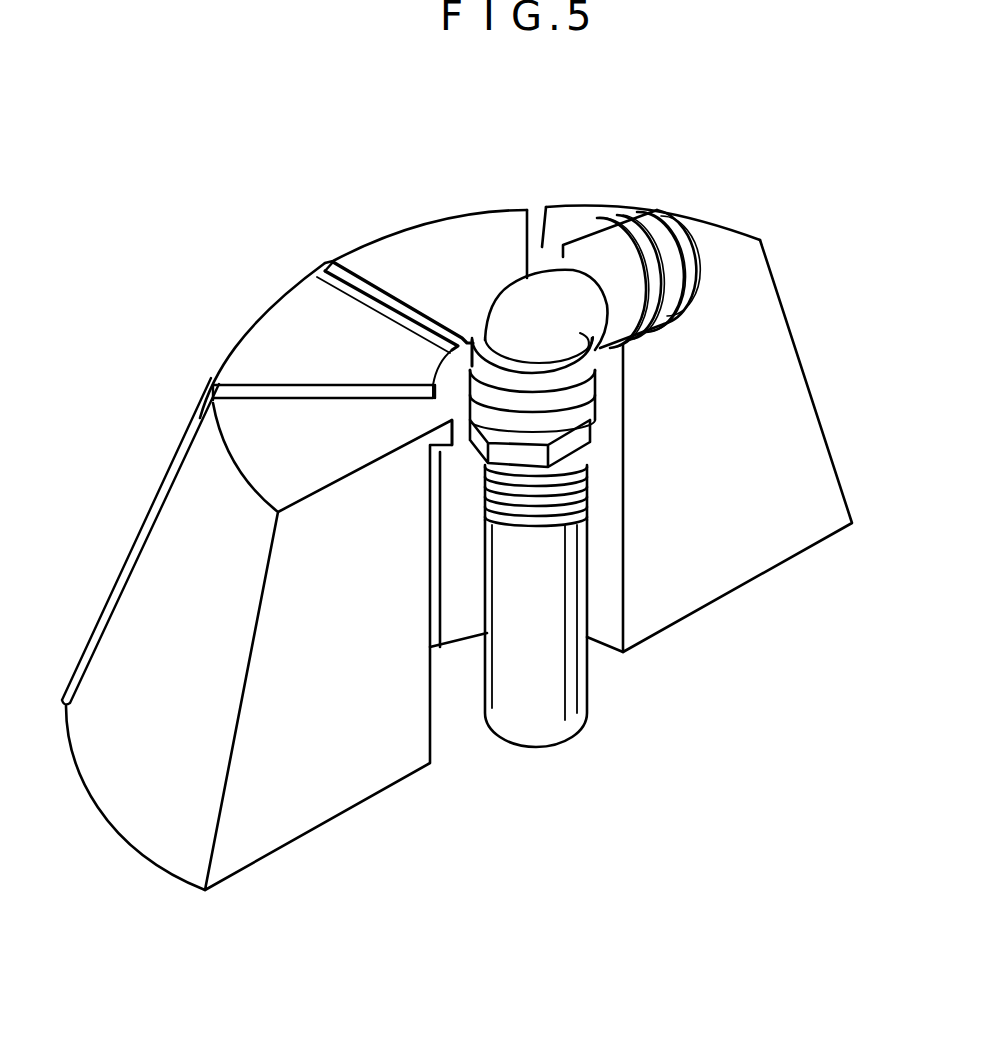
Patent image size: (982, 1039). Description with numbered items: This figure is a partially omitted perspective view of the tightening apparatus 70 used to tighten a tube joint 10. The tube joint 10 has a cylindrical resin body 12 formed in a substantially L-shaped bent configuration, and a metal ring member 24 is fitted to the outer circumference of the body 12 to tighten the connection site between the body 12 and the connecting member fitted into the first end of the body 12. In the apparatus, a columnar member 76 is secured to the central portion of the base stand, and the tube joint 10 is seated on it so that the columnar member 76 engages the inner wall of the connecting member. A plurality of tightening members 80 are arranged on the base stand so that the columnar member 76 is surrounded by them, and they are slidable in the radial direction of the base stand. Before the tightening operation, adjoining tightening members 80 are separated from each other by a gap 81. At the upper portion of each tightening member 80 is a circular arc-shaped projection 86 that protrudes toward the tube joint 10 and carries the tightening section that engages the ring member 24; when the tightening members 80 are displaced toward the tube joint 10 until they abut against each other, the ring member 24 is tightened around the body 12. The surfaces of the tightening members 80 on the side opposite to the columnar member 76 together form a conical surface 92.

The tightening apparatus 70 is at (722, 151).
The tube joint 10 is at (653, 205).
The body 12 is at (520, 287).
The ring member 24 is at (558, 428).
The columnar member 76 is at (543, 735).
The tightening members 80 is at (433, 237).
The gap 81 is at (538, 227).
The circular arc-shaped projection 86 is at (448, 422).
The conical surface 92 is at (176, 452).